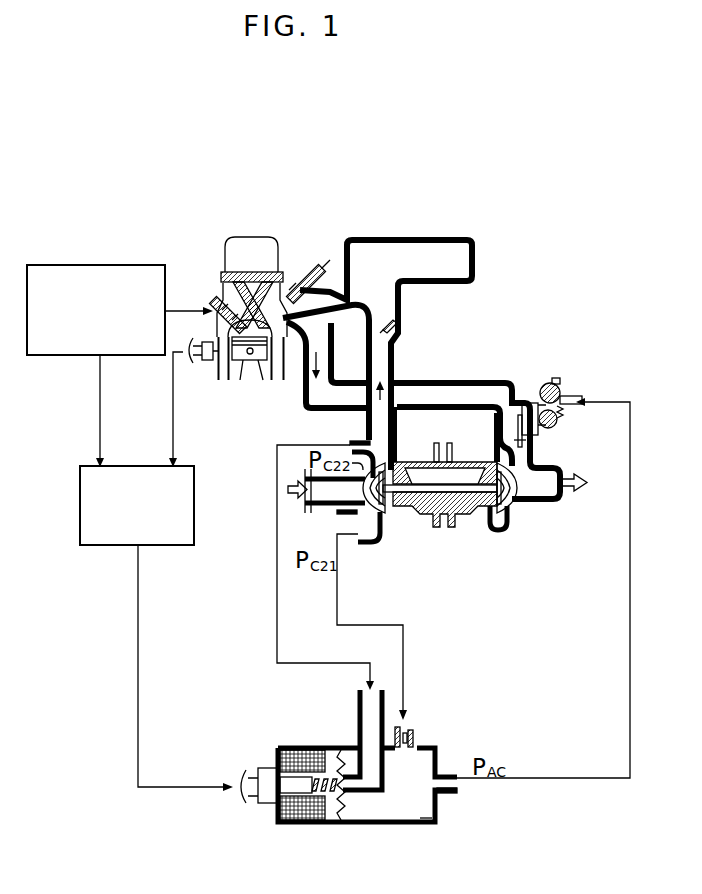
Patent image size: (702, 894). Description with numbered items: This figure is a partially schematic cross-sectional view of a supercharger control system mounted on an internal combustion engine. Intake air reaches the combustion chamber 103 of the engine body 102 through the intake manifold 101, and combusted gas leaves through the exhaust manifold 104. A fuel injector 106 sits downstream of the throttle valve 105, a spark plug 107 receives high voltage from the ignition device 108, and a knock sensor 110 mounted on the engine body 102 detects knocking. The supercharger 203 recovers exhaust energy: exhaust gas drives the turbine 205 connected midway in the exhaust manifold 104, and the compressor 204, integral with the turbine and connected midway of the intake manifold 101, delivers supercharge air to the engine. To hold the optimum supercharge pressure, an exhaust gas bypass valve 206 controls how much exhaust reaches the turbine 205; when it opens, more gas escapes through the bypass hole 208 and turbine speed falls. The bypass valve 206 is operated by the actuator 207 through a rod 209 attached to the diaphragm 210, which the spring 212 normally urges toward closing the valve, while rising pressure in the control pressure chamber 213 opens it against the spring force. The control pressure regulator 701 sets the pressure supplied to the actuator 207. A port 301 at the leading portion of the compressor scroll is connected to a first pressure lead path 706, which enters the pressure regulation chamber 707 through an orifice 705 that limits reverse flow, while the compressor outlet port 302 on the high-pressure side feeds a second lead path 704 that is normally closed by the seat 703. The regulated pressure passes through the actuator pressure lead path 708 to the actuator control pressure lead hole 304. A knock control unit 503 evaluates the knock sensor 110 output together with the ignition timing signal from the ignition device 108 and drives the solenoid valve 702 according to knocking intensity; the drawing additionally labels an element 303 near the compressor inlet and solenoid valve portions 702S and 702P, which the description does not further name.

The intake manifold 101 is at (390, 360).
The engine body 102 is at (216, 253).
The combustion chamber 103 is at (255, 361).
The exhaust manifold 104 is at (480, 383).
The throttle valve 105 is at (396, 325).
The fuel injector 106 is at (320, 268).
The spark plug 107 is at (214, 308).
The ignition device 108 is at (82, 265).
The knock sensor 110 is at (207, 364).
The supercharger 203 is at (493, 571).
The compressor 204 is at (380, 514).
The turbine 205 is at (508, 509).
The exhaust gas bypass valve 206 is at (524, 441).
The actuator 207 is at (628, 354).
The bypass hole 208 is at (493, 438).
The rod 209 is at (536, 402).
The diaphragm 210 is at (563, 413).
The spring 212 is at (558, 378).
The control pressure chamber 213 is at (570, 394).
The port 301 is at (368, 540).
The compressor outlet port 302 is at (355, 440).
The air inlet 303 is at (340, 514).
The actuator control pressure lead hole 304 is at (616, 401).
The knock control unit 503 is at (80, 483).
The control pressure regulator 701 is at (422, 889).
The solenoid valve 702 is at (263, 808).
The solenoid coil 702S is at (292, 748).
The solenoid plunger 702P is at (300, 824).
The seat 703 is at (349, 806).
The pressure lead path 704 is at (360, 700).
The orifice 705 is at (418, 736).
The pressure lead path 706 is at (411, 726).
The pressure regulation chamber 707 is at (424, 817).
The pressure lead path 708 is at (448, 795).